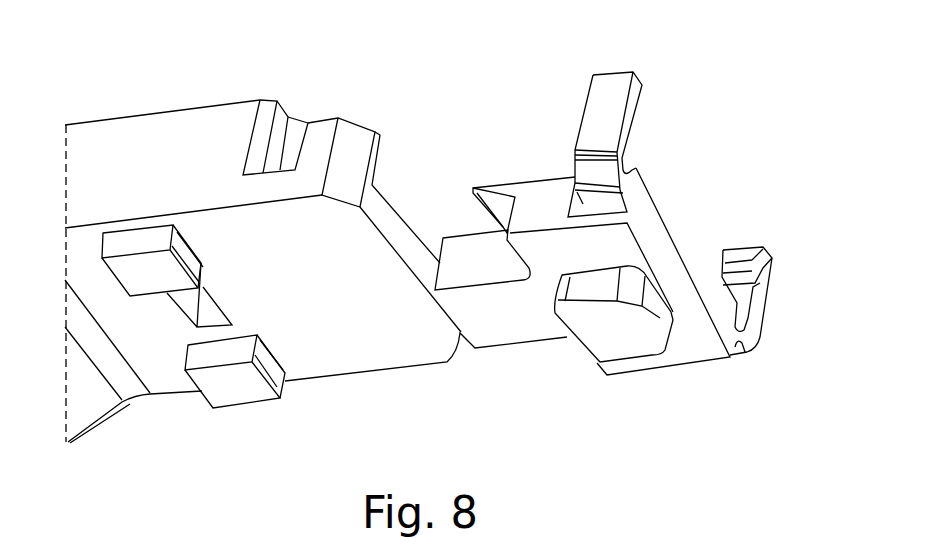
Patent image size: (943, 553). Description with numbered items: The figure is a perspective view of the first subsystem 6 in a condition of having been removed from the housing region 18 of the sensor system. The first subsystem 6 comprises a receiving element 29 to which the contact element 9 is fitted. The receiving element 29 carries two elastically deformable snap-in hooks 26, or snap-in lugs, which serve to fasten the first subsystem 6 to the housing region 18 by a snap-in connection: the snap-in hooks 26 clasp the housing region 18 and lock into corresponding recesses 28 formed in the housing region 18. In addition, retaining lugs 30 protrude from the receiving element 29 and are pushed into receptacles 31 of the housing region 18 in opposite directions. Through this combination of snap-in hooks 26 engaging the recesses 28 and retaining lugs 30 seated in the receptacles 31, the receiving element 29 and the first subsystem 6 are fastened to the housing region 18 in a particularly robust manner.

The first subsystem 6 is at (622, 221).
The contact element 9 is at (590, 327).
The housing region 18 is at (203, 130).
The snap-in hooks 26 is at (610, 92).
The recesses 28 is at (292, 138).
The receiving element 29 is at (668, 235).
The retaining lugs 30 is at (493, 188).
The receptacles 31 is at (185, 238).